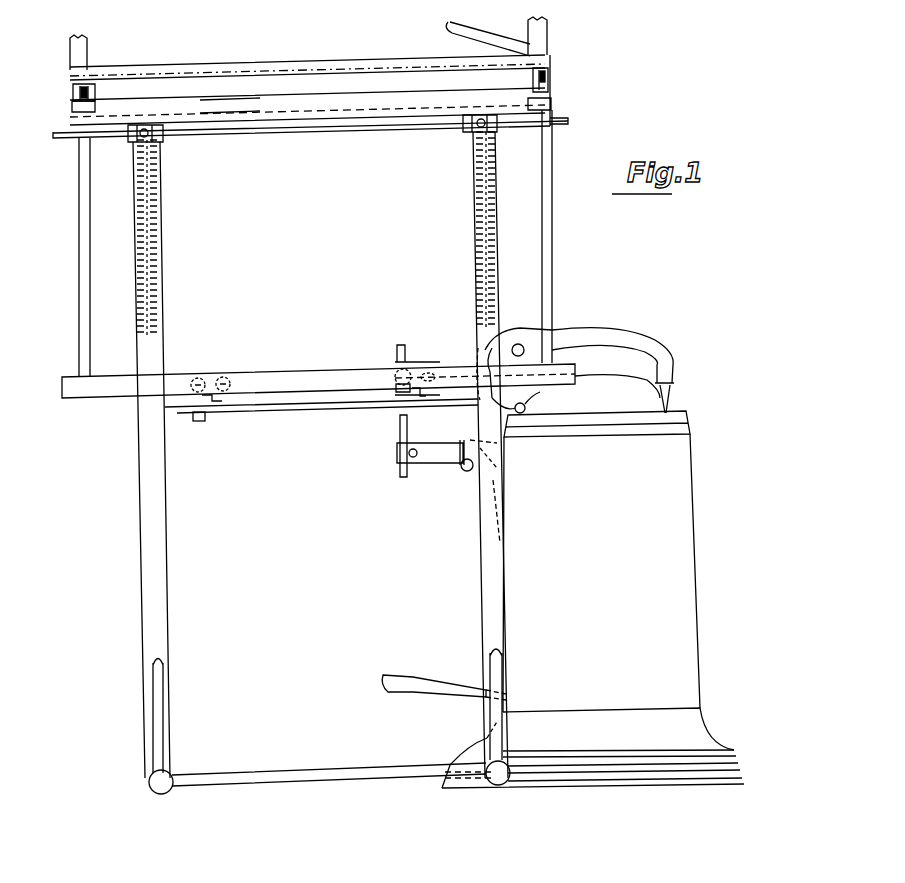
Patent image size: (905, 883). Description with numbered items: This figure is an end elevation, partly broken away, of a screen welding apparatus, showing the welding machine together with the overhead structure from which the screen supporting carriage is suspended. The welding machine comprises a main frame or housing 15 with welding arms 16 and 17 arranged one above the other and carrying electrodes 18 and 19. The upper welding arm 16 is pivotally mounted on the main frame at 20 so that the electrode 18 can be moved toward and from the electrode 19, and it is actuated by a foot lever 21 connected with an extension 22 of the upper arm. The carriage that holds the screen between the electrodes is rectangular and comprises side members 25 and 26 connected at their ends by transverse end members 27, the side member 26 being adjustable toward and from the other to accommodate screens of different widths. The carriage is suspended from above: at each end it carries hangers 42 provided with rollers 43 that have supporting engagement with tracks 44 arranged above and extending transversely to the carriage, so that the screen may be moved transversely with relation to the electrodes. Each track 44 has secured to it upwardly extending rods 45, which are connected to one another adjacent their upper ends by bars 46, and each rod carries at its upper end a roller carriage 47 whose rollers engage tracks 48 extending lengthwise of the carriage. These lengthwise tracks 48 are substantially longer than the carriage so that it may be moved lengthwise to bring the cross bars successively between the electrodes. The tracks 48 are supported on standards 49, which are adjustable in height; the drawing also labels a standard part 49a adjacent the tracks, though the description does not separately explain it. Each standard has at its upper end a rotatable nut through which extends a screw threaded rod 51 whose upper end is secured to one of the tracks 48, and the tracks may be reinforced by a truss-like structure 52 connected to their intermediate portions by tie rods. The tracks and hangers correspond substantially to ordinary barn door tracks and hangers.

The main frame or housing 15 is at (680, 513).
The upper welding arm 16 is at (430, 361).
The lower welding arm 17 is at (438, 464).
The upper electrode 18 is at (398, 392).
The lower electrode 19 is at (398, 437).
The pivot 20 is at (526, 406).
The foot lever 21 is at (426, 690).
The extension of the upper arm 22 is at (600, 332).
The side member 25 is at (494, 406).
The adjustable side member 26 is at (198, 422).
The transverse end members 27 is at (315, 408).
The hangers 42 is at (216, 397).
The rollers 43 is at (228, 378).
The tracks 44 is at (290, 378).
The upwardly extending rods 45 is at (78, 249).
The bars 46 is at (323, 126).
The roller carriage 47 is at (73, 104).
The tracks 48 is at (93, 96).
The standards 49 is at (158, 566).
The flange plate 49a is at (420, 114).
The screw threaded rod 51 is at (160, 152).
The truss-like structure 52 is at (88, 47).